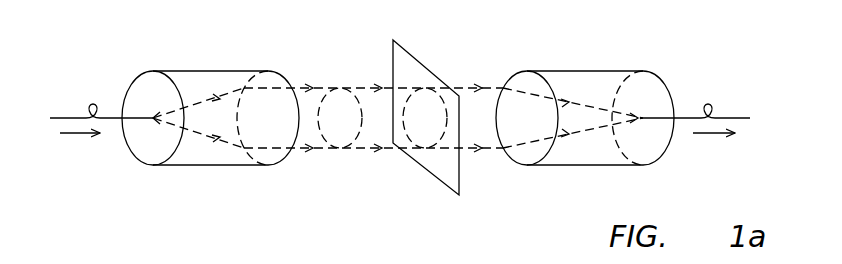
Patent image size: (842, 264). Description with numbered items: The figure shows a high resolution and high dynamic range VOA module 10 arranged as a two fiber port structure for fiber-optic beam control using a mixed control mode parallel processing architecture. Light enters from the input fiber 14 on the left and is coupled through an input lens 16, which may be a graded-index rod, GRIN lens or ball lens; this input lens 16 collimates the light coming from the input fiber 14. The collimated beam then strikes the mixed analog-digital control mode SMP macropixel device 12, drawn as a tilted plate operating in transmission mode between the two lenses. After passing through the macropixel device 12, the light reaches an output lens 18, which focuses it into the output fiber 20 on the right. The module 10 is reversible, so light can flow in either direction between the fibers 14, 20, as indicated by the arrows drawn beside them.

The VOA module 10 is at (318, 207).
The SMP macropixel device 12 is at (412, 57).
The input fiber 14 is at (66, 118).
The input lens 16 is at (207, 72).
The output lens 18 is at (585, 72).
The output fiber 20 is at (737, 118).